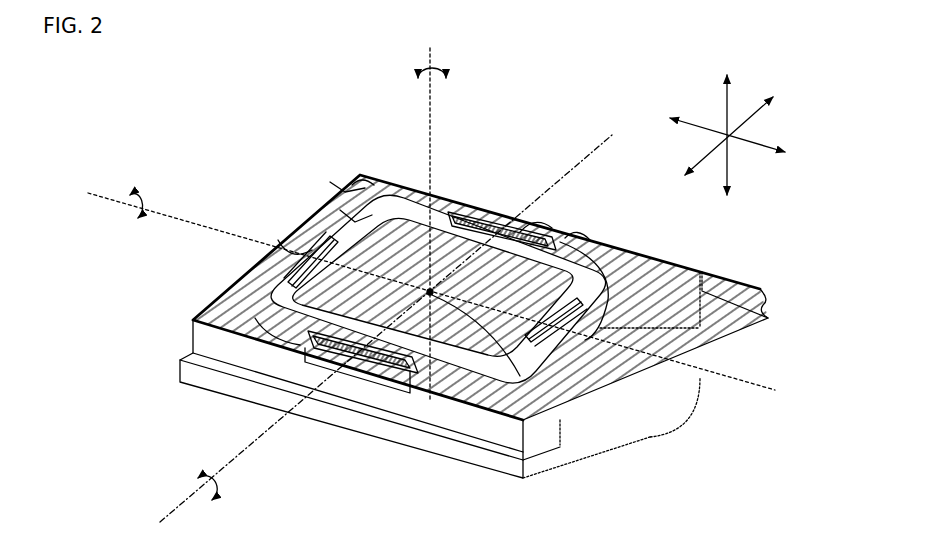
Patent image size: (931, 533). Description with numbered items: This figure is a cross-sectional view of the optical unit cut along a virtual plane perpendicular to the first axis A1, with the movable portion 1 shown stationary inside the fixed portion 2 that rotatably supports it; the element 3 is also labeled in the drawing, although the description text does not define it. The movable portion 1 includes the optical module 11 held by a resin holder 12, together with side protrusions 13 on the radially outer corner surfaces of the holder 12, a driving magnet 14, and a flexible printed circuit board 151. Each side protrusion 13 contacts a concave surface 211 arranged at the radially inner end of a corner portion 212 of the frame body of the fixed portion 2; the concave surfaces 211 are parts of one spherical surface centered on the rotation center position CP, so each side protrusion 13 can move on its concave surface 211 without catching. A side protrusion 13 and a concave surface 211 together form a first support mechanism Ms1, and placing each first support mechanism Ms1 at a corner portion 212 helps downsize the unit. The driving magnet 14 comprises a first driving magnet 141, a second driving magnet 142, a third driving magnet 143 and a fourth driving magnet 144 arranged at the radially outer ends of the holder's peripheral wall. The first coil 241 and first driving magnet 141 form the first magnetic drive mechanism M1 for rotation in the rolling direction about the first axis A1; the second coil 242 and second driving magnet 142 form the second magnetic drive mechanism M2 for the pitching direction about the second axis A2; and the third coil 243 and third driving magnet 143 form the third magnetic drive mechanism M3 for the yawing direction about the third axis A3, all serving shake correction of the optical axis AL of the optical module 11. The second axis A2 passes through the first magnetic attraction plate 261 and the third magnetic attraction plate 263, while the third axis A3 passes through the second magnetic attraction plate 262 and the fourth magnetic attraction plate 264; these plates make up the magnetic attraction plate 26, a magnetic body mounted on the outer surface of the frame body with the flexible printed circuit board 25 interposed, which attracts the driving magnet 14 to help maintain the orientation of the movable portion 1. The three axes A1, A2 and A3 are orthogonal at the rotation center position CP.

The movable portion 1 is at (515, 373).
The fixed portion 2 is at (213, 397).
The movable unit holder 3 is at (588, 233).
The optical module 11 is at (423, 340).
The holder 12 is at (432, 300).
The side protrusion 13 is at (362, 182).
The driving magnet 14 is at (575, 232).
The flexible printed circuit board 25 is at (735, 288).
The magnetic attraction plate 26 is at (315, 371).
The first driving magnet 141 is at (355, 352).
The second driving magnet 142 is at (258, 268).
The third driving magnet 143 is at (490, 230).
The fourth driving magnet 144 is at (627, 328).
The flexible printed circuit board 151 is at (650, 420).
The concave surface 211 is at (362, 218).
The corner portion 212 is at (358, 180).
The first coil 241 is at (403, 357).
The second coil 242 is at (255, 288).
The third coil 243 is at (452, 213).
The first magnetic attraction plate 261 is at (345, 365).
The second magnetic attraction plate 262 is at (282, 242).
The third magnetic attraction plate 263 is at (535, 224).
The fourth magnetic attraction plate 264 is at (600, 332).
The first axis A1 is at (430, 126).
The second axis A2 is at (160, 522).
The third axis A3 is at (88, 196).
The optical axis AL is at (434, 100).
The rotation center position CP is at (540, 367).
The first magnetic drive mechanism M1 is at (378, 487).
The second magnetic drive mechanism M2 is at (157, 234).
The third magnetic drive mechanism M3 is at (553, 152).
The first support mechanism Ms1 is at (255, 154).